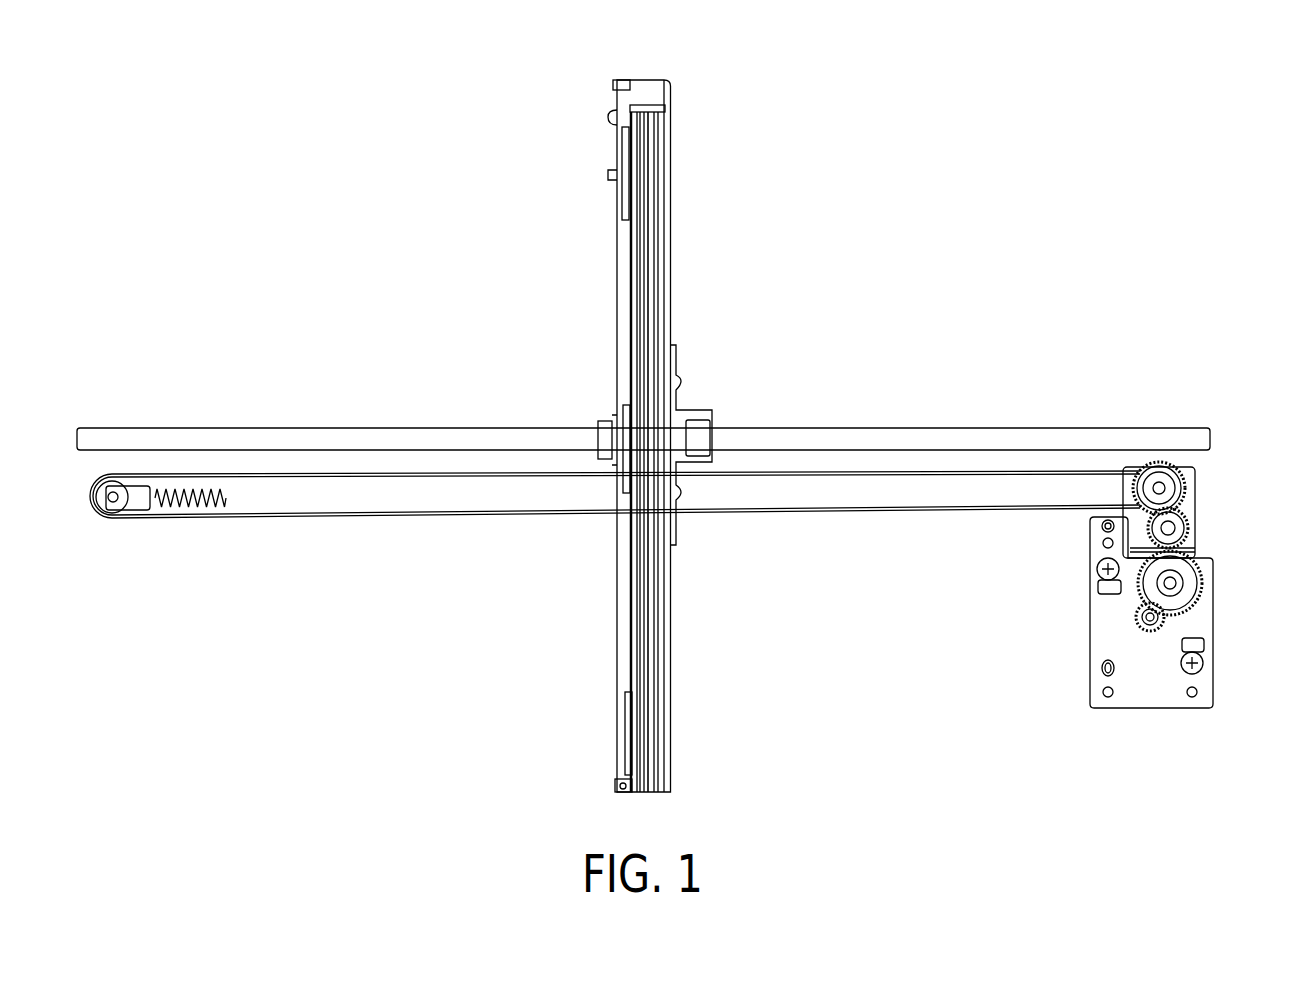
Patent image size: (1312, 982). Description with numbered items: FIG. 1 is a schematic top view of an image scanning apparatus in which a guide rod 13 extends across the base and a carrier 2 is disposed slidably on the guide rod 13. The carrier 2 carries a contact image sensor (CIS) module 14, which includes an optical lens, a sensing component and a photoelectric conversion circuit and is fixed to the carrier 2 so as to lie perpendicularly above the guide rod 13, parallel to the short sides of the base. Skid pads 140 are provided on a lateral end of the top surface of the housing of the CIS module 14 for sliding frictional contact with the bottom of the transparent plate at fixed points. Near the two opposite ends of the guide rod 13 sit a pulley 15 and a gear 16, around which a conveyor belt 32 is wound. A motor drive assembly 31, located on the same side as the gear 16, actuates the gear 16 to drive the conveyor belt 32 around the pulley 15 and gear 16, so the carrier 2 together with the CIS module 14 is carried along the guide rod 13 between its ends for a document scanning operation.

The carrier 2 is at (713, 400).
The guide rod 13 is at (945, 428).
The contact image sensor (CIS) module 14 is at (683, 224).
The skid pads 140 is at (611, 86).
The pulley 15 is at (118, 510).
The gear 16 is at (1180, 486).
The motor drive assembly 31 is at (1055, 623).
The conveyor belt 32 is at (440, 516).